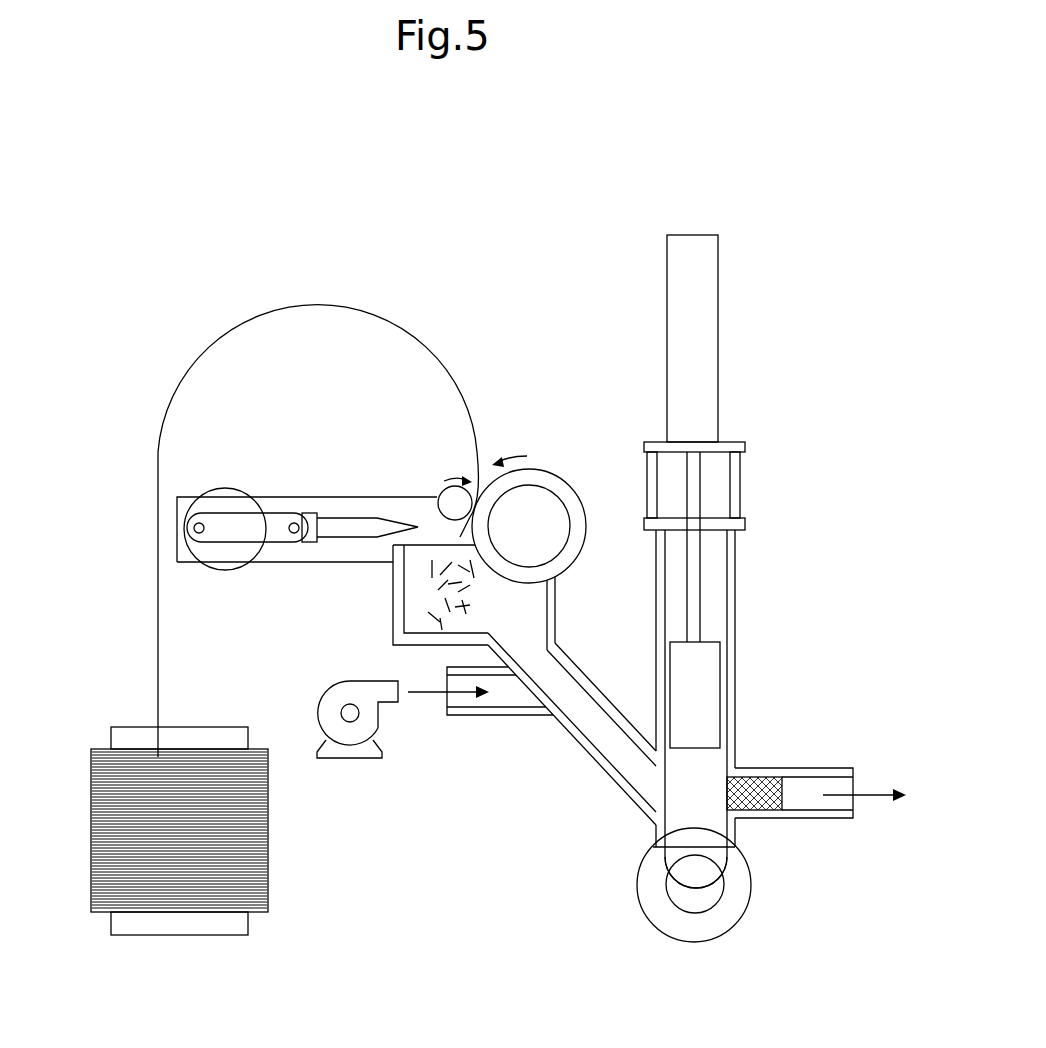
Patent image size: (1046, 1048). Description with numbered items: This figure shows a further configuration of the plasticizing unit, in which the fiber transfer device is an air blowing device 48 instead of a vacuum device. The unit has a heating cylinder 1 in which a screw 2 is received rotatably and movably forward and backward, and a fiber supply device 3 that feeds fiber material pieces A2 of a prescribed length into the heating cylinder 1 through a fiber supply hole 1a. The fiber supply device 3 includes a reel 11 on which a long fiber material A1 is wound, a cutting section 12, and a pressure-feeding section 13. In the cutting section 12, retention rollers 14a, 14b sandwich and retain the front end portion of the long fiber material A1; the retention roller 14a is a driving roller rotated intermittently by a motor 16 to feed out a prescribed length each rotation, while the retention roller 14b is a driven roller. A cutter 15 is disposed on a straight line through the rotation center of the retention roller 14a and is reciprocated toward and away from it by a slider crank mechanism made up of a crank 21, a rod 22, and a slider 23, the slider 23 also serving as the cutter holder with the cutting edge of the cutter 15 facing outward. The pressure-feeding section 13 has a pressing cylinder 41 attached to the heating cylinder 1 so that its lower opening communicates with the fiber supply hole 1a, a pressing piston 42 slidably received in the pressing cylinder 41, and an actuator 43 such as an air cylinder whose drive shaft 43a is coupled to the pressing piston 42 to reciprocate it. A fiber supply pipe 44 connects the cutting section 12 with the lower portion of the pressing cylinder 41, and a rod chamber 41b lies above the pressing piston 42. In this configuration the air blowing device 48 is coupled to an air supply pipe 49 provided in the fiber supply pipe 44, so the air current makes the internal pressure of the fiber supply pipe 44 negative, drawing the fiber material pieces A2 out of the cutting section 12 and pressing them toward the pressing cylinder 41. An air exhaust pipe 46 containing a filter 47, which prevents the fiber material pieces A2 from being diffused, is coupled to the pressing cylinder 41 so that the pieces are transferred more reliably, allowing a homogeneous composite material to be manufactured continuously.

The heating cylinder 1 is at (690, 942).
The fiber supply hole 1a is at (723, 858).
The screw 2 is at (710, 898).
The fiber supply device 3 is at (563, 296).
The reel 11 is at (248, 916).
The cutting section 12 is at (346, 497).
The pressure-feeding section 13 is at (740, 472).
The retention roller 14a is at (545, 470).
The retention roller 14b is at (443, 507).
The cutter 15 is at (347, 530).
The motor 16 is at (555, 537).
The crank 21 is at (222, 497).
The rod 22 is at (233, 536).
The slider 23 is at (313, 542).
The pressing cylinder 41 is at (733, 657).
The rod chamber 41b is at (717, 617).
The pressing piston 42 is at (708, 697).
The actuator 43 is at (705, 282).
The drive shaft 43a is at (692, 602).
The fiber supply pipe 44 is at (577, 740).
The air exhaust pipe 46 is at (842, 768).
The filter 47 is at (763, 798).
The air blowing device 48 is at (372, 718).
The air supply pipe 49 is at (480, 715).
The long fiber material A1 is at (158, 632).
The fiber material pieces A2 is at (436, 618).